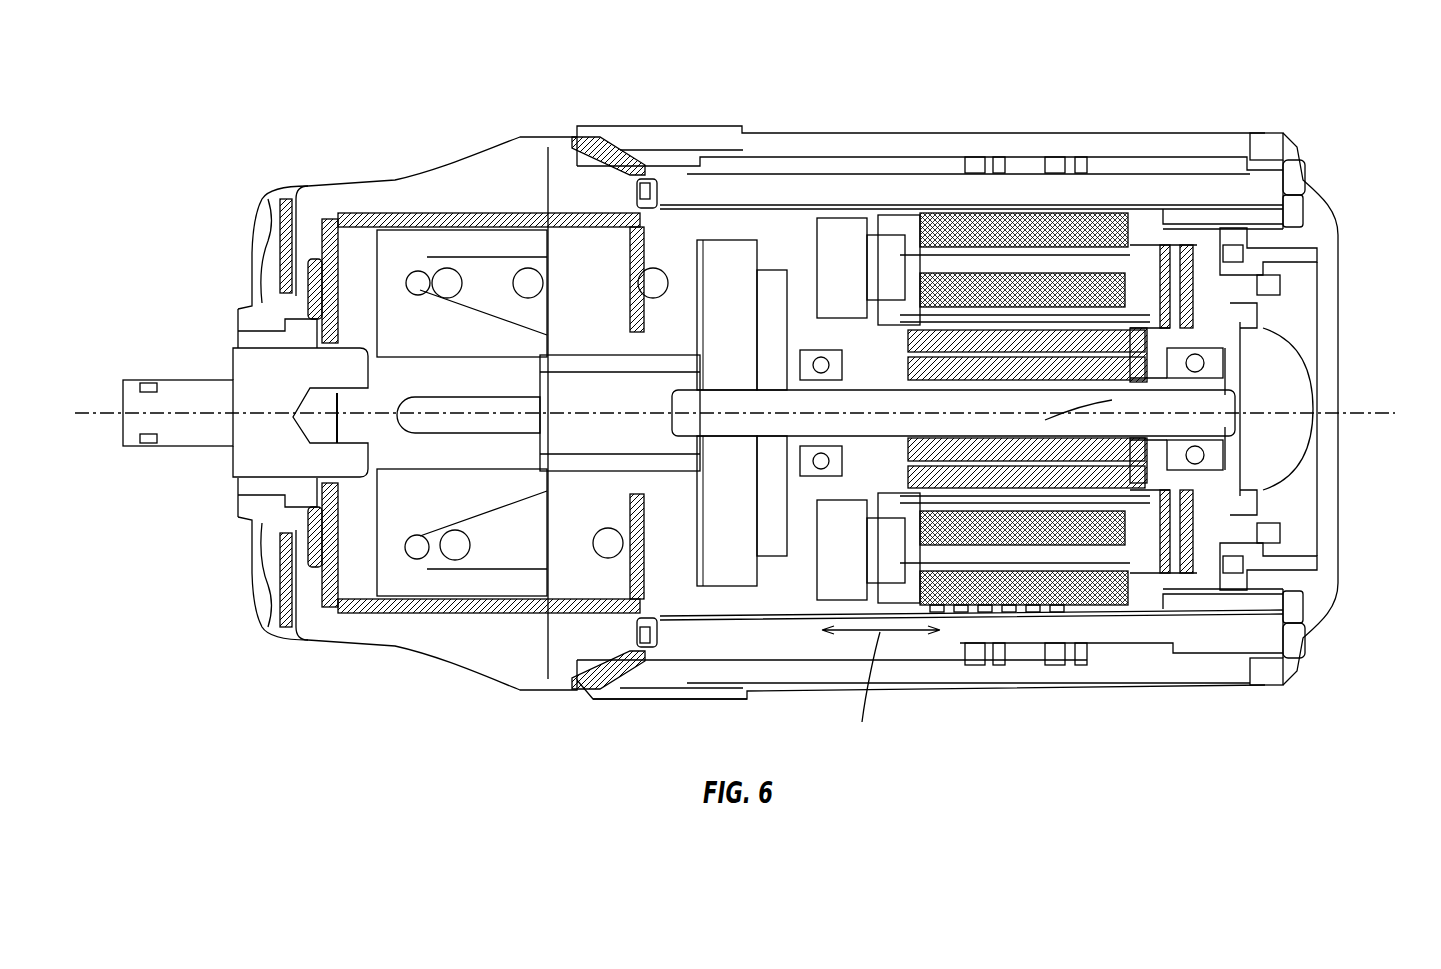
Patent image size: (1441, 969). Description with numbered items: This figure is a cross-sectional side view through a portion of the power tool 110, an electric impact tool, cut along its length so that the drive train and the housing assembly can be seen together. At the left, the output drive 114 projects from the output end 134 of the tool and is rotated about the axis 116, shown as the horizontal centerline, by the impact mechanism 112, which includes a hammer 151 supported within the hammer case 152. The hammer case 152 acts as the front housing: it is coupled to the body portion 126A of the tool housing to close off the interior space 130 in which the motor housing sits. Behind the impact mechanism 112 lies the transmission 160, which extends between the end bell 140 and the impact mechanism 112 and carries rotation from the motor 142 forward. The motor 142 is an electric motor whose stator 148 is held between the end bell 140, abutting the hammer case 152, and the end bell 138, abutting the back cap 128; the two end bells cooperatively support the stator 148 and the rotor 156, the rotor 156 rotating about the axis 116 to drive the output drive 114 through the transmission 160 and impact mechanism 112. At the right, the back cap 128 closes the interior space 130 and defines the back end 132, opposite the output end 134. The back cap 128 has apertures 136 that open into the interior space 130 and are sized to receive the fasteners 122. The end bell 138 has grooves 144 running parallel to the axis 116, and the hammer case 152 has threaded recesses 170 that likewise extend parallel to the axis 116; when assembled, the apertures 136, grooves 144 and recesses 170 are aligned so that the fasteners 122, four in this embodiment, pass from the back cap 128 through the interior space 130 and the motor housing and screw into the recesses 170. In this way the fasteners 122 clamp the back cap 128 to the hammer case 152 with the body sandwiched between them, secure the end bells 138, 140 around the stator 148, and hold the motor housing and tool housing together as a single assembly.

The power tool 110 is at (1232, 58).
The impact mechanism 112 is at (405, 212).
The output drive 114 is at (205, 385).
The axis 116 is at (103, 411).
The fasteners 122 is at (1300, 170).
The housing portion 126A is at (1122, 680).
The back cap 128 is at (1312, 268).
The interior space 130 is at (703, 190).
The back end 132 is at (1365, 528).
The output end 134 is at (176, 535).
The apertures 136 is at (1266, 157).
The end bell 138 is at (1240, 322).
The end bell 140 is at (805, 250).
The motor 142 is at (1015, 613).
The grooves 144 is at (1096, 215).
The stator 148 is at (1042, 215).
The hammer 151 is at (412, 578).
The hammer case 152 is at (498, 660).
The rotor 156 is at (820, 430).
The transmission 160 is at (733, 222).
The threaded recesses 170 is at (637, 190).